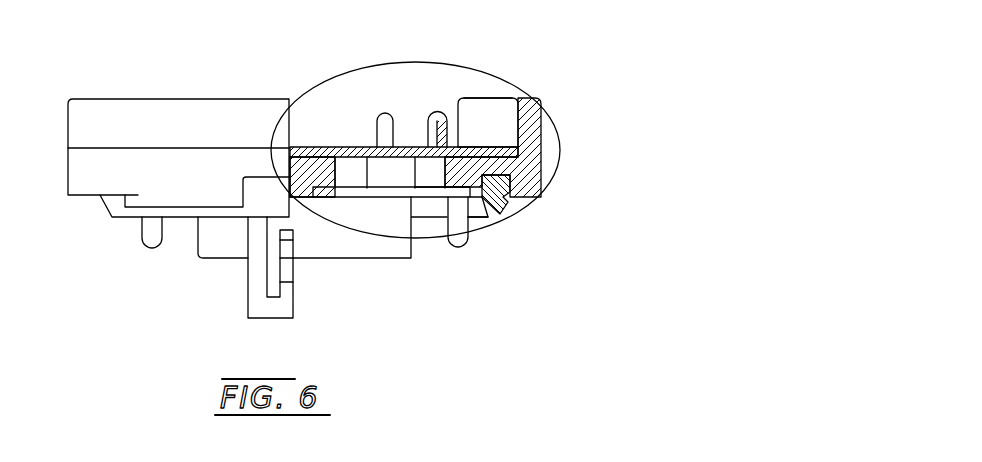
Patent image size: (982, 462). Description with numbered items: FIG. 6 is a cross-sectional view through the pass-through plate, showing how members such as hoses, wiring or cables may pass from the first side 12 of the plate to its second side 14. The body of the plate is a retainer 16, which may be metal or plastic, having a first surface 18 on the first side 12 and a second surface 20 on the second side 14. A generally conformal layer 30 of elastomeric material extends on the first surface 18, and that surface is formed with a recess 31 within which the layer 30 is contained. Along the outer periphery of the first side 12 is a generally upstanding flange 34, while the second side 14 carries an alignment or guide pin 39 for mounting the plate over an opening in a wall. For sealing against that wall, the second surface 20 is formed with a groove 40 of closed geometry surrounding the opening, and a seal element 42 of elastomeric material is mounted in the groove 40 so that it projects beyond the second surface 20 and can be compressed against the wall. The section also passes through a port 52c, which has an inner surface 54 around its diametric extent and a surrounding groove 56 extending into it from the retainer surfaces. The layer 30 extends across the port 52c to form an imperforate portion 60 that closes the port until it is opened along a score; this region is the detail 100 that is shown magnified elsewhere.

The first side 12 is at (214, 55).
The second side 14 is at (166, 275).
The retainer 16 is at (542, 158).
The first surface 18 is at (311, 148).
The second surface 20 is at (291, 198).
The layer 30 is at (497, 141).
The recess 31 is at (501, 135).
The flange 34 is at (478, 146).
The guide pin 39 is at (461, 248).
The groove 40 is at (510, 201).
The seal element 42 is at (486, 217).
The port 52c is at (405, 165).
The inner surface 54 is at (336, 168).
The groove 56 is at (431, 190).
The imperforate portion 60 is at (360, 147).
The detail 100 is at (506, 82).